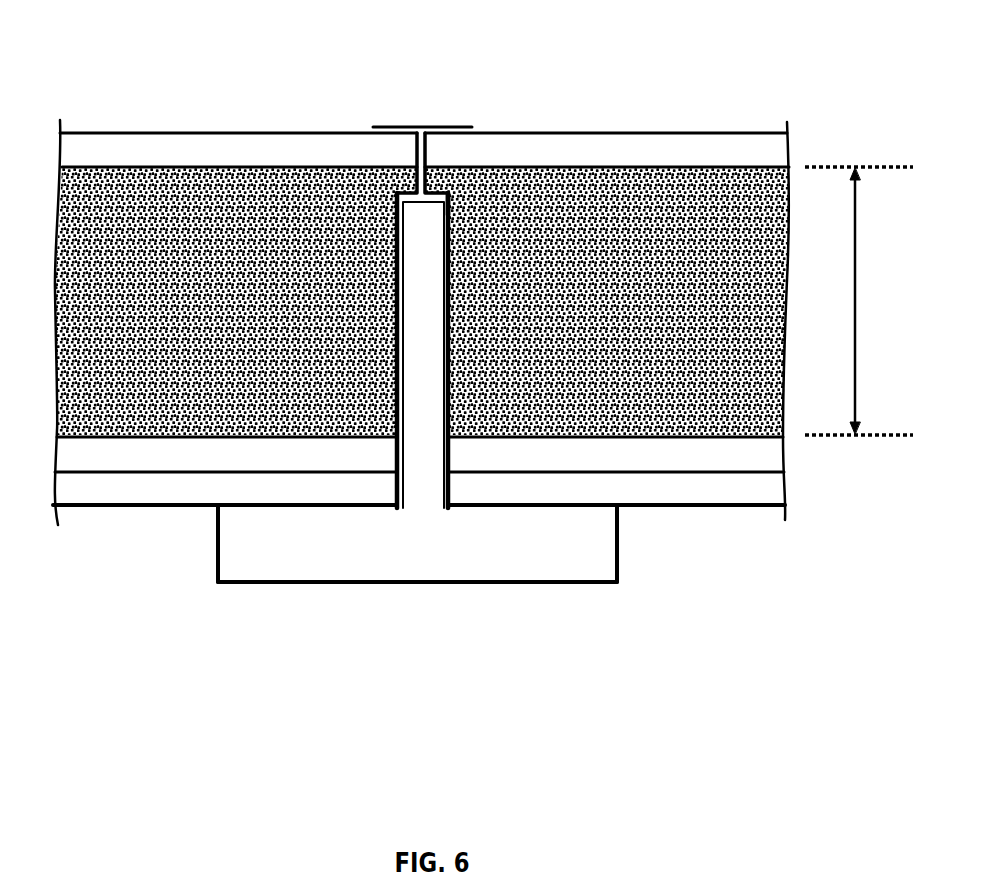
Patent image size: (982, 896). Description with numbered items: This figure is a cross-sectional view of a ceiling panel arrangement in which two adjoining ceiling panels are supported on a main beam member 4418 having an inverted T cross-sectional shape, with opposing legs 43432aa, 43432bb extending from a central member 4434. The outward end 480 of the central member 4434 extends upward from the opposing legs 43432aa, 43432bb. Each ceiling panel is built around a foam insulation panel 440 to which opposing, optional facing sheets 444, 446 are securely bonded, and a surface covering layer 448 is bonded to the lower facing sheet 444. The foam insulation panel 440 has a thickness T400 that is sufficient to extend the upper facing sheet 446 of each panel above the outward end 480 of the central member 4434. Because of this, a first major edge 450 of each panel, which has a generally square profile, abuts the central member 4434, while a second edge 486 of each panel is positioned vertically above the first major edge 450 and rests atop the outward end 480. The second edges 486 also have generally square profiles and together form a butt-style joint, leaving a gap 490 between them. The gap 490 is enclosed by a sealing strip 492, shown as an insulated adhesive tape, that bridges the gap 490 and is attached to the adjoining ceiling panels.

The foam insulation panel 440 is at (88, 308).
The facing sheet 444 is at (118, 455).
The facing sheet 446 is at (145, 152).
The surface covering layer 448 is at (182, 485).
The first major edge 450 is at (392, 223).
The outward end 480 is at (447, 207).
The second edge 486 is at (413, 168).
The gap 490 is at (418, 153).
The sealing strip 492 is at (418, 123).
The through via 4434 is at (420, 475).
The pad 4418 is at (340, 558).
The pad right edge 43432aa is at (588, 562).
The pad left edge 43432bb is at (257, 557).
The thickness T400 is at (857, 222).